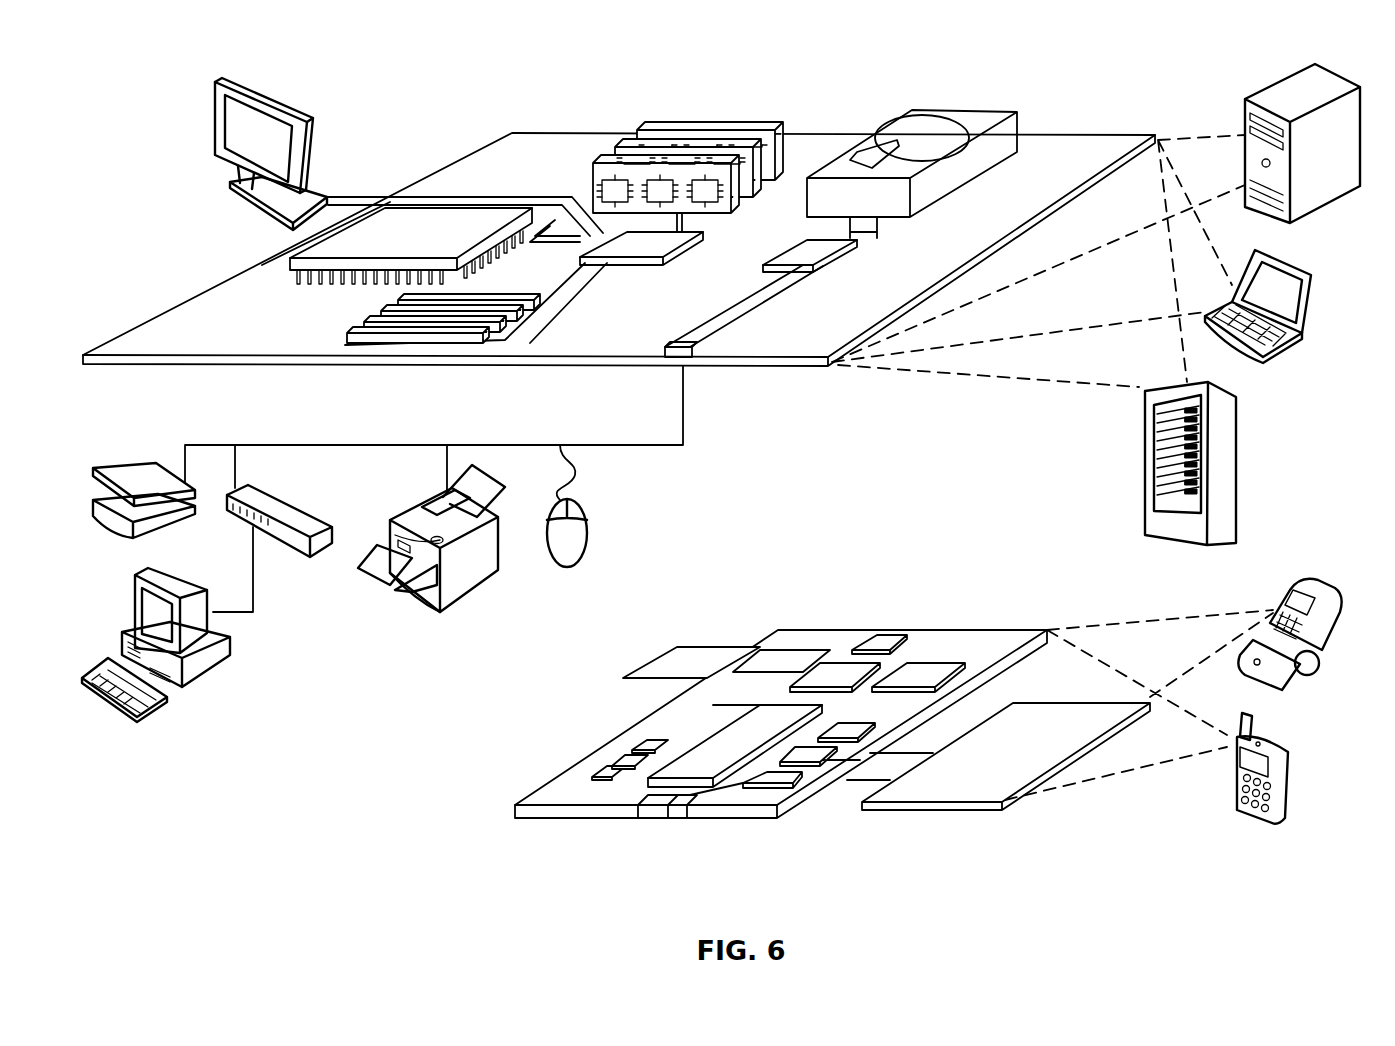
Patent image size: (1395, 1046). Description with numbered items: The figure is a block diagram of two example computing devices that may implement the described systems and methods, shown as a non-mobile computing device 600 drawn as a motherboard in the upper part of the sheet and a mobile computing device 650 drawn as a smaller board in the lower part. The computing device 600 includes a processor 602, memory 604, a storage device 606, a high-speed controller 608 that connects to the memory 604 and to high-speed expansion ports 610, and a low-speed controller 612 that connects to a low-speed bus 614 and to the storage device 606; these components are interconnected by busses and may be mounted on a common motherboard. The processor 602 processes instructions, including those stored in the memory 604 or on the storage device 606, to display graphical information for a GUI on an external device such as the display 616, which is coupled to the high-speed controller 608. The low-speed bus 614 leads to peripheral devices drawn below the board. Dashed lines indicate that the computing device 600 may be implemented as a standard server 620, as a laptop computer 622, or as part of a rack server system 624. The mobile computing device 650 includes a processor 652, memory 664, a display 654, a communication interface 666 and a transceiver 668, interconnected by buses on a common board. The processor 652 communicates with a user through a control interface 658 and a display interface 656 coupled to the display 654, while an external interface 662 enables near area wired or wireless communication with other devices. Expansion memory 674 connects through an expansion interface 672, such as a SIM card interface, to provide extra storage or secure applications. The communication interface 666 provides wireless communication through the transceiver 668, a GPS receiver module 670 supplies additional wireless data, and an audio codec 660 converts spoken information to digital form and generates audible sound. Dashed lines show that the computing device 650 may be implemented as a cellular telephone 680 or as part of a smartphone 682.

The computing device 600 is at (122, 98).
The processor 602 is at (300, 262).
The memory 604 is at (645, 128).
The storage device 606 is at (895, 112).
The high-speed controller 608 is at (607, 243).
The high-speed expansion ports 610 is at (373, 325).
The low-speed controller 612 is at (803, 247).
The low-speed bus 614 is at (694, 358).
The display 616 is at (220, 80).
The standard server 620 is at (1245, 118).
The laptop computer 622 is at (1320, 278).
The rack server system 624 is at (1145, 490).
The computing device 650 is at (491, 810).
The processor 652 is at (707, 772).
The display 654 is at (962, 790).
The display interface 656 is at (778, 780).
The control interface 658 is at (817, 755).
The audio codec 660 is at (843, 730).
The external interface 662 is at (668, 807).
The memory 664 is at (612, 764).
The communication interface 666 is at (835, 672).
The transceiver 668 is at (919, 670).
The GPS receiver module 670 is at (889, 630).
The expansion interface 672 is at (757, 648).
The expansion memory 674 is at (676, 644).
The cellular telephone 680 is at (1297, 584).
The smartphone 682 is at (1235, 773).